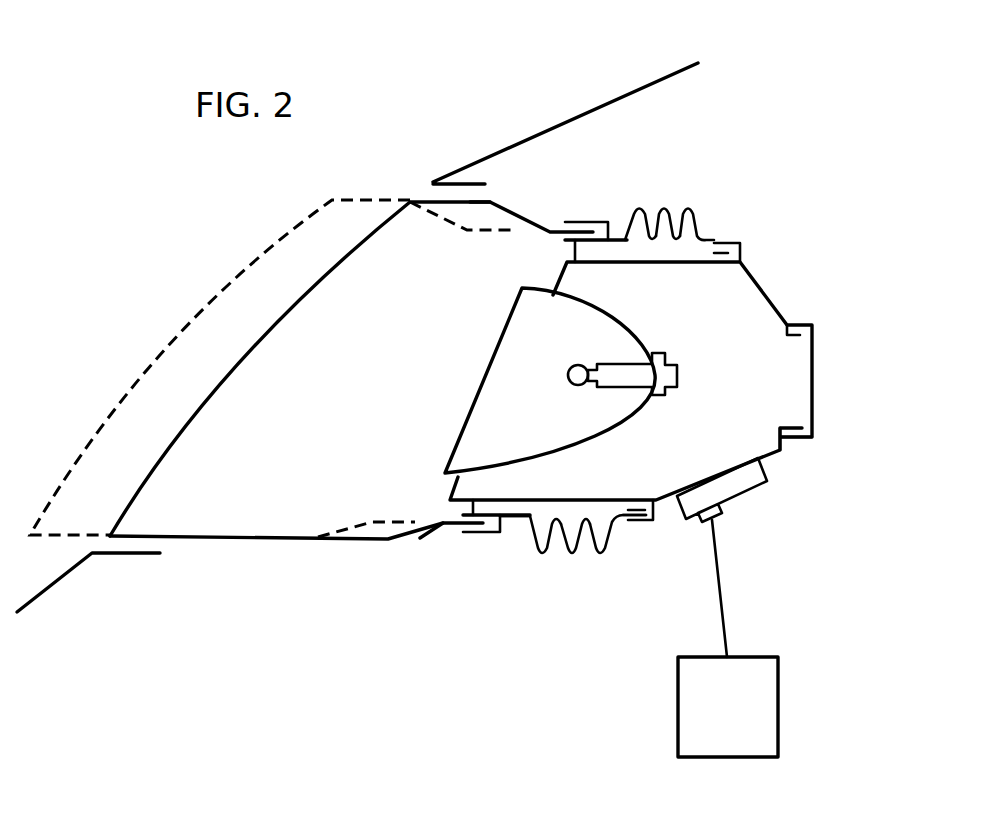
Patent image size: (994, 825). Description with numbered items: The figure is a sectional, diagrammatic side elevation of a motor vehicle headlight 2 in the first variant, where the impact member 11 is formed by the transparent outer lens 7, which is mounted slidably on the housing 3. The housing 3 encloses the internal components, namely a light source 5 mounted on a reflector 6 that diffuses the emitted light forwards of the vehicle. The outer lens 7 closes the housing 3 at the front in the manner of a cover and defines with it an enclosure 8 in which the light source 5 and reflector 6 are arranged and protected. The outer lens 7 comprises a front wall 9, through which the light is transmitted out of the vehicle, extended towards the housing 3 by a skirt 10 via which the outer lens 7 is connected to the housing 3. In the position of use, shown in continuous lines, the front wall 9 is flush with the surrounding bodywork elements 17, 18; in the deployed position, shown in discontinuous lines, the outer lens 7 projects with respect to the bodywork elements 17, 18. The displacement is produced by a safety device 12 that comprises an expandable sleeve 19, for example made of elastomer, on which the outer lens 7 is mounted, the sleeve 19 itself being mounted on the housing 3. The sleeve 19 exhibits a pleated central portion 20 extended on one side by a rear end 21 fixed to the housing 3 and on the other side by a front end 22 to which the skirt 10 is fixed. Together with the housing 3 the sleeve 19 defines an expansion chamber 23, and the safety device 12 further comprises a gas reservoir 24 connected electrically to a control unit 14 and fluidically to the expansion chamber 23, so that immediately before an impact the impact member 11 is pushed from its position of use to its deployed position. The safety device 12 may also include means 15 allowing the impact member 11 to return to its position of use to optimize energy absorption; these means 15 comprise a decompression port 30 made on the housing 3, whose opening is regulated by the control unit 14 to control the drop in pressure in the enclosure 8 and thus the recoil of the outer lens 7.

The headlight 2 is at (343, 580).
The housing 3 is at (762, 285).
The light source 5 is at (578, 365).
The reflector 6 is at (558, 452).
The outer lens 7 is at (220, 367).
The enclosure 8 is at (375, 375).
The front wall 9 is at (158, 450).
The skirt 10 is at (473, 202).
The impact member 11 is at (198, 396).
The safety device 12 is at (553, 578).
The control unit 14 is at (742, 724).
The means for allowing displacement 15 is at (788, 328).
The bodywork element 17 is at (50, 583).
The bodywork element 18 is at (503, 147).
The expandable sleeve 19 is at (690, 200).
The pleated central portion 20 is at (662, 207).
The rear end 21 is at (717, 256).
The front end 22 is at (593, 245).
The expansion chamber 23 is at (697, 232).
The gas reservoir 24 is at (750, 493).
The decompression port 30 is at (783, 447).